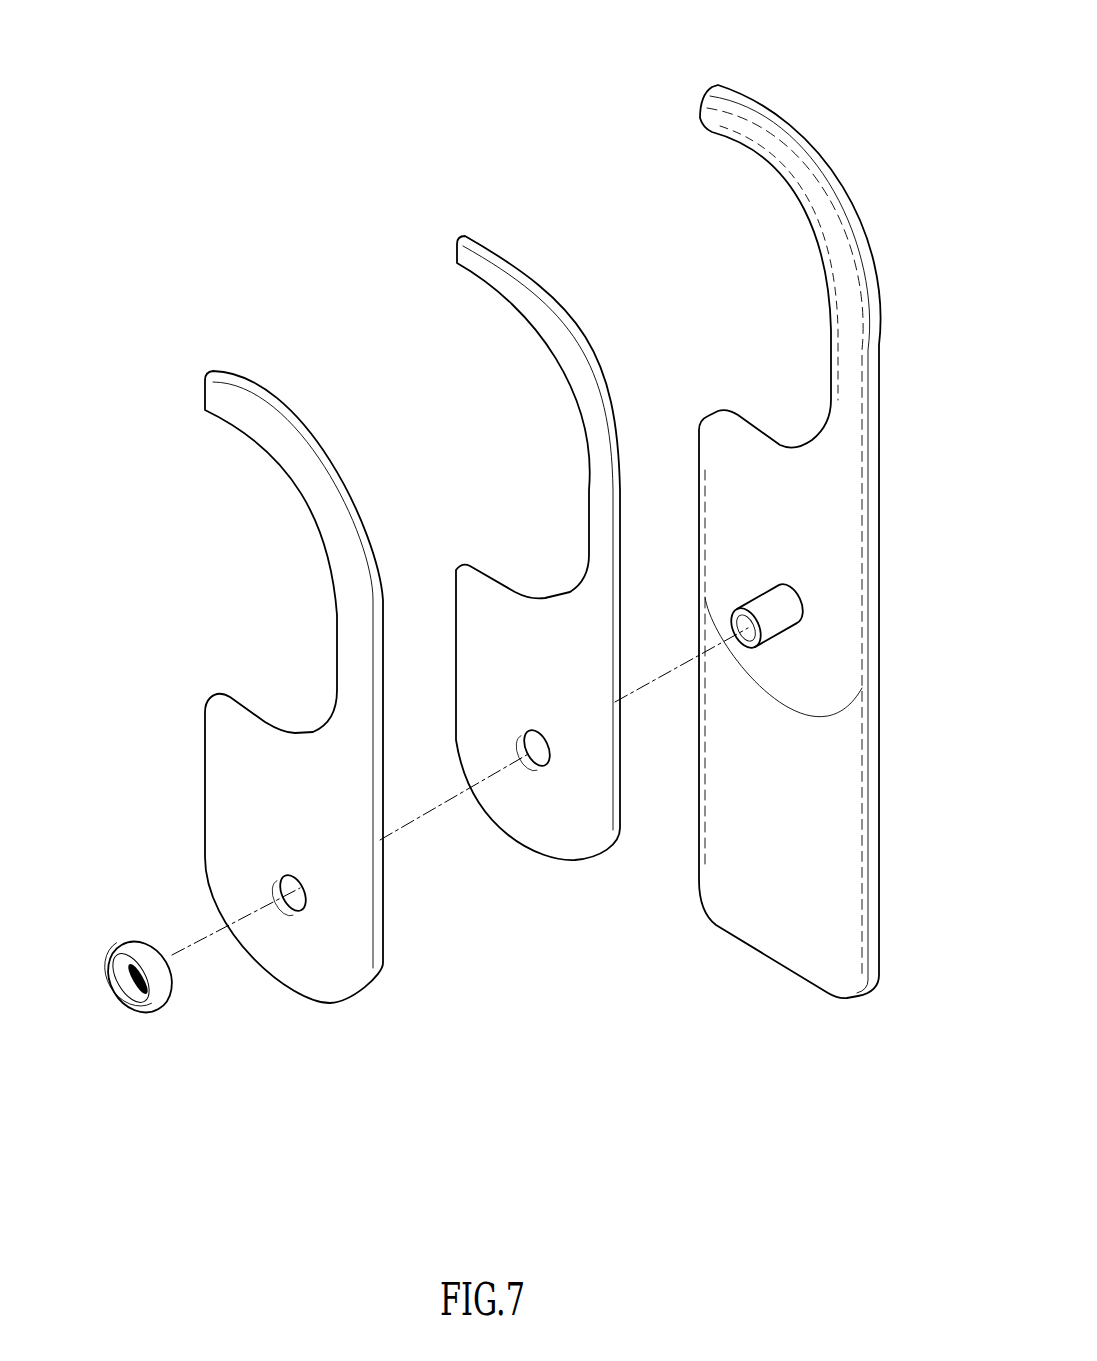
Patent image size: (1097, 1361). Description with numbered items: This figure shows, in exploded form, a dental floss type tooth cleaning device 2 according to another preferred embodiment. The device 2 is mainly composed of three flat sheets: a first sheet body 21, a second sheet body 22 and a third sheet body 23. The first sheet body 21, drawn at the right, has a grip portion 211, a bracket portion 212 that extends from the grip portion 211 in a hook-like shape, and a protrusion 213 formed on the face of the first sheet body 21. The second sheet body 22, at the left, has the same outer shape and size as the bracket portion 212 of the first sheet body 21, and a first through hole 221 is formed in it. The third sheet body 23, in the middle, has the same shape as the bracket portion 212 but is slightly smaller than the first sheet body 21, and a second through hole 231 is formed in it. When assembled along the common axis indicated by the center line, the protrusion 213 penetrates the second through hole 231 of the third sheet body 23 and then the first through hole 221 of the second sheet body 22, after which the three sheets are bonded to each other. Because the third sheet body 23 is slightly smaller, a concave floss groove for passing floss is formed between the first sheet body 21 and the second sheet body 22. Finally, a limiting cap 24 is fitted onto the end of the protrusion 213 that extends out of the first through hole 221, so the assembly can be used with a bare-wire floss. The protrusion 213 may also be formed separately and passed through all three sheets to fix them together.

The dental floss type tooth cleaning device 2 is at (178, 119).
The first sheet body 21 is at (801, 569).
The grip portion 211 is at (830, 872).
The bracket portion 212 is at (803, 190).
The protrusion 213 is at (773, 610).
The second sheet body 22 is at (239, 779).
The first through hole 221 is at (283, 877).
The third sheet body 23 is at (528, 648).
The second through hole 231 is at (553, 760).
The limiting cap 24 is at (127, 1000).